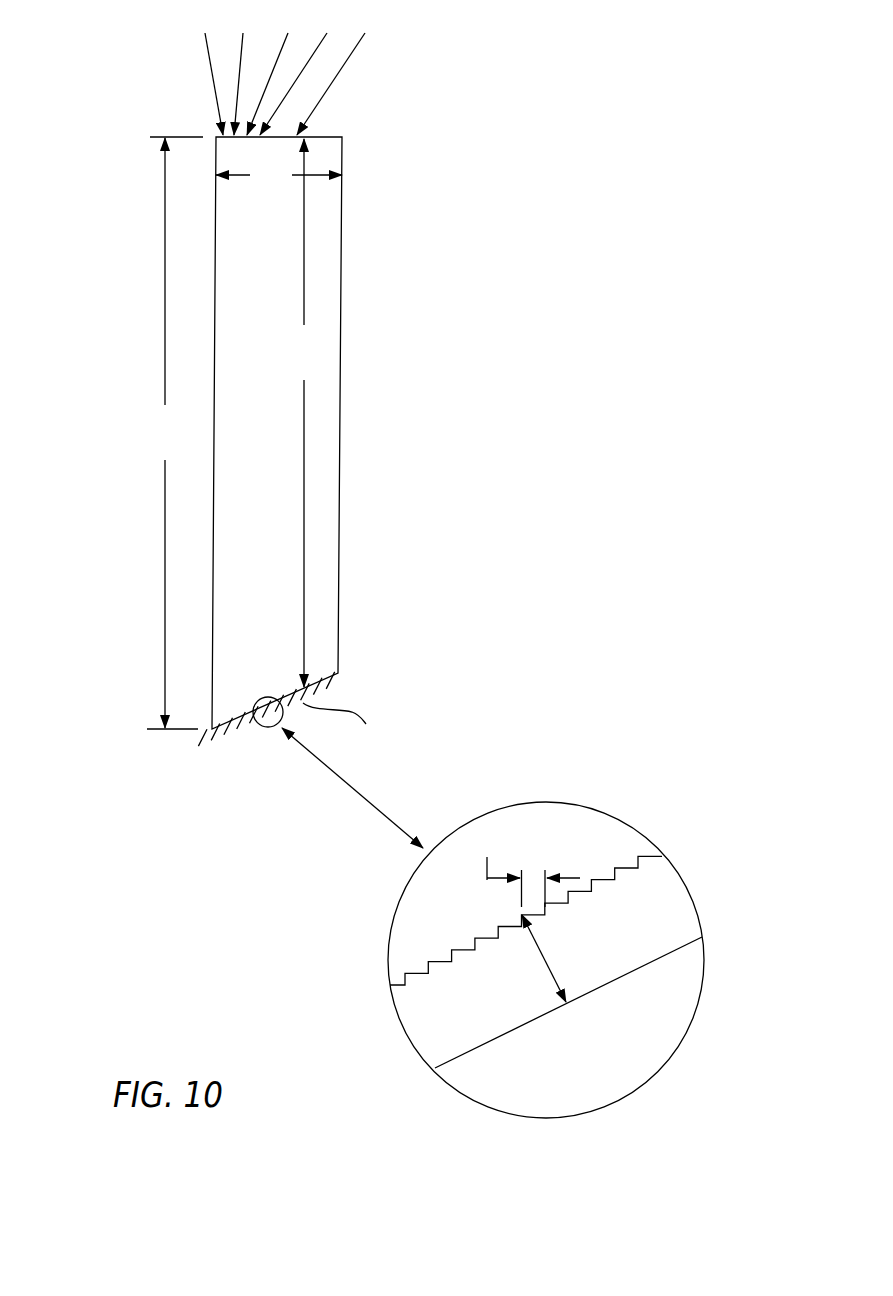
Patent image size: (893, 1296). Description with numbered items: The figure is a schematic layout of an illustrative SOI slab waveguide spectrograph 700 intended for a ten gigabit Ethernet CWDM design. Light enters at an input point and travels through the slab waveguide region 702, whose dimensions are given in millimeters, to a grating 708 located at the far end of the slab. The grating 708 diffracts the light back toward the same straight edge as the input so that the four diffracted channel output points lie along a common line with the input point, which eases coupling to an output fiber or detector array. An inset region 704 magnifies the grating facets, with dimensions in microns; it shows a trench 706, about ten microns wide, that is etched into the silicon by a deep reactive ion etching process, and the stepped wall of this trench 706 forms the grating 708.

The SOI slab waveguide spectrograph 700 is at (118, 322).
The slab waveguide region 702 is at (308, 280).
The inset region 704 is at (705, 976).
The trench 706 is at (328, 687).
The grating 708 is at (237, 735).